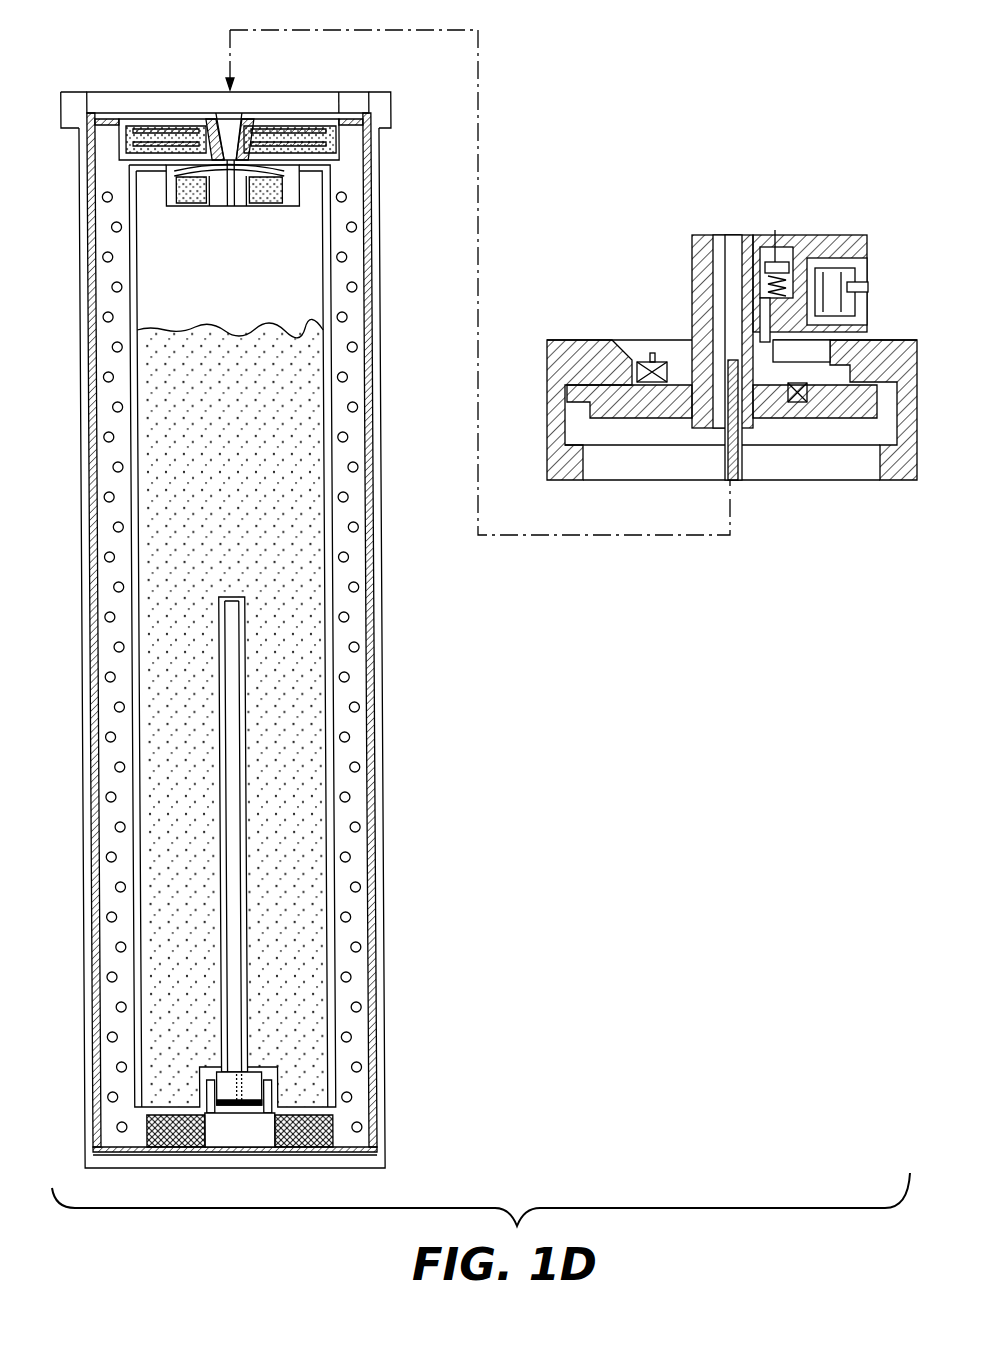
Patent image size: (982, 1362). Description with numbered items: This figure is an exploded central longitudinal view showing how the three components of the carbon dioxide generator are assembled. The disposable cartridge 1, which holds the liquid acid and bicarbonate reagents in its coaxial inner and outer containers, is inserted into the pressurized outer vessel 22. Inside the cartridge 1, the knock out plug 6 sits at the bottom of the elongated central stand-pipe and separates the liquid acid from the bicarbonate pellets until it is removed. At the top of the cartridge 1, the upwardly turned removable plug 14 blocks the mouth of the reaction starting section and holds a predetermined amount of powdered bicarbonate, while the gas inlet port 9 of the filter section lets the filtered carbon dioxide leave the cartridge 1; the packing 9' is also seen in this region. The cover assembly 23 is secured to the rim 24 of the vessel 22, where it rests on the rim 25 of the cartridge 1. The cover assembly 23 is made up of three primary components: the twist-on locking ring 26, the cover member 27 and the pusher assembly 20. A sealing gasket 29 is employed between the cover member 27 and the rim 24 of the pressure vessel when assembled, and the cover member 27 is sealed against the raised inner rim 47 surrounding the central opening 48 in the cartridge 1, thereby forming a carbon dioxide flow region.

The disposable cartridge 1 is at (93, 527).
The knock out plug 6 is at (240, 1106).
The gas inlet port 9 is at (241, 616).
The gland packing 9' is at (228, 83).
The removable plug 14 is at (195, 206).
The pusher assembly 20 is at (742, 236).
The pressurized outer vessel 22 is at (374, 408).
The cover assembly 23 is at (666, 278).
The rim of the vessel 24 is at (393, 121).
The rim of the cartridge 25 is at (95, 112).
The twist-on locking ring 26 is at (570, 340).
The cover member 27 is at (620, 418).
The sealing gasket 29 is at (368, 100).
The raised inner rim 47 is at (240, 123).
The central opening 48 is at (227, 115).